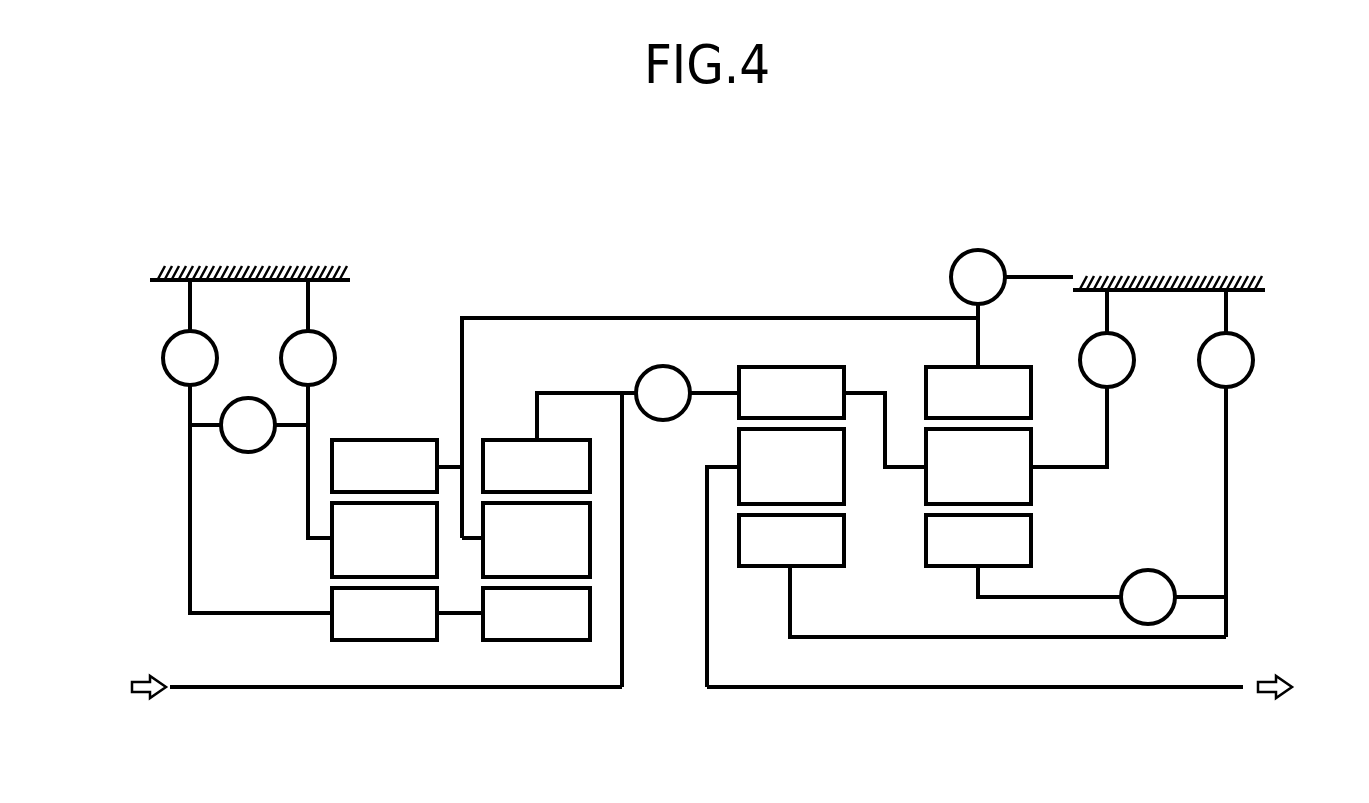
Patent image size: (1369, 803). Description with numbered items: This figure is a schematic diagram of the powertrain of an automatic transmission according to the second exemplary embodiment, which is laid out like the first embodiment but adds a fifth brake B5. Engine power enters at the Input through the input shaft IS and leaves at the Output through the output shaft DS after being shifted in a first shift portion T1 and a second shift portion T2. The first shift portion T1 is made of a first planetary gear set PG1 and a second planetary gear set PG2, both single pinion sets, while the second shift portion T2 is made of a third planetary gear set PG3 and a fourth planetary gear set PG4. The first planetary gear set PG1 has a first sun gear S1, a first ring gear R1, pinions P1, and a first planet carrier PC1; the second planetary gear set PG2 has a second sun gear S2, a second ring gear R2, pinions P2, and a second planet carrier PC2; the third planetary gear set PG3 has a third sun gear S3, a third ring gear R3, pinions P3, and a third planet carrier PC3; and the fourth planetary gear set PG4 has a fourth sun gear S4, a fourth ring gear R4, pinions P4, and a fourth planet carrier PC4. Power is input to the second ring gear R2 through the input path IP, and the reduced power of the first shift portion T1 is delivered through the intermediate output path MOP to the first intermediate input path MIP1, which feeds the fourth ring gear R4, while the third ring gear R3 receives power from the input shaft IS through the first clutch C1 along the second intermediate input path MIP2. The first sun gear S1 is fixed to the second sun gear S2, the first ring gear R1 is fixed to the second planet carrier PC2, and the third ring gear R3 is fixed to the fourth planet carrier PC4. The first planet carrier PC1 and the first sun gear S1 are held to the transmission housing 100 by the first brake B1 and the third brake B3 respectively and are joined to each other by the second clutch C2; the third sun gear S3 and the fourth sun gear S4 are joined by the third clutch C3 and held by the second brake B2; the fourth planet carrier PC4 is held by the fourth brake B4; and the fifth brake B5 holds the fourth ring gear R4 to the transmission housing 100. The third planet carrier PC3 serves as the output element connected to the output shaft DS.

The transmission housing 100 is at (277, 268).
The input shaft IS is at (243, 689).
The output shaft DS is at (1114, 689).
The input Input is at (118, 687).
The output Output is at (1313, 687).
The intermediate output path MOP is at (444, 358).
The first intermediate input path MIP1 is at (650, 305).
The second main input path MIP2 is at (650, 365).
The input path IP is at (567, 540).
The first shift portion T1 is at (412, 615).
The second shift portion T2 is at (952, 579).
The first planetary gear set PG1 is at (359, 590).
The second planetary gear set PG2 is at (514, 590).
The third planetary gear set PG3 is at (952, 558).
The fourth planetary gear set PG4 is at (954, 558).
The first ring gear R1 is at (397, 466).
The second ring gear R2 is at (536, 466).
The third ring gear R3 is at (832, 417).
The fourth ring gear R4 is at (978, 392).
The first pinion gear P1 is at (384, 540).
The second pinion gear P2 is at (536, 540).
The third pinion gear P3 is at (791, 466).
The fourth pinion gear P4 is at (978, 466).
The first sun gear S1 is at (407, 614).
The second sun gear S2 is at (536, 614).
The third sun gear S3 is at (982, 576).
The fourth sun gear S4 is at (978, 540).
The first planet carrier PC1 is at (306, 519).
The second planet carrier PC2 is at (466, 545).
The third planet carrier PC3 is at (714, 466).
The fourth planet carrier PC4 is at (906, 470).
The first brake B1 is at (308, 410).
The second brake B2 is at (1226, 464).
The third brake B3 is at (247, 447).
The fourth brake B4 is at (1082, 379).
The fifth brake B5 is at (1012, 277).
The first clutch C1 is at (663, 393).
The second clutch C2 is at (249, 425).
The third clutch C3 is at (1102, 595).